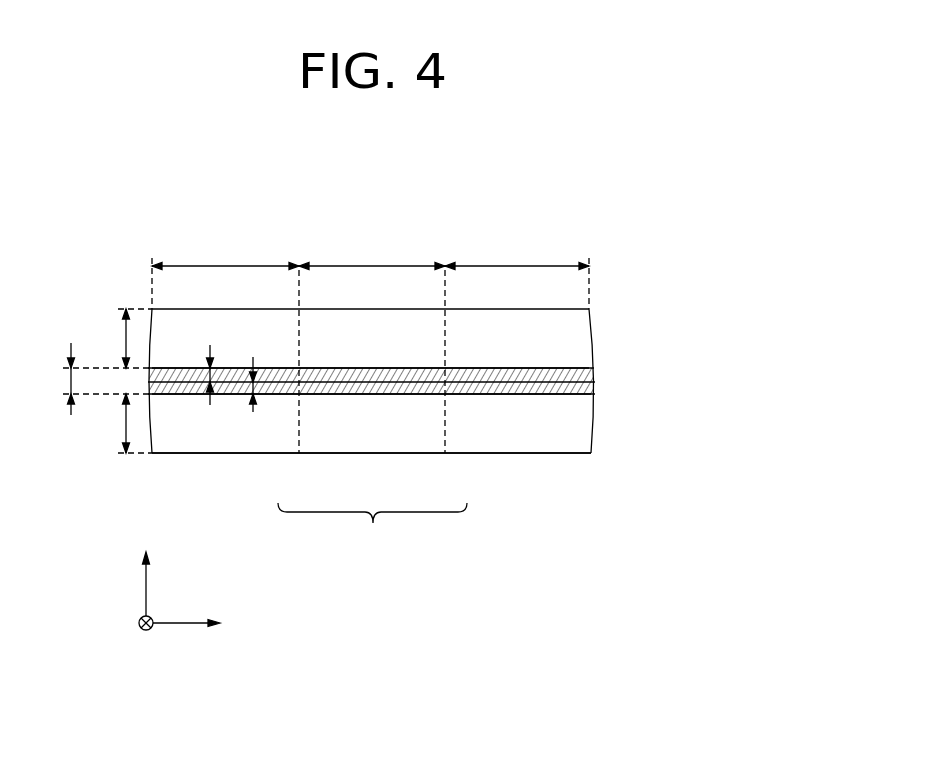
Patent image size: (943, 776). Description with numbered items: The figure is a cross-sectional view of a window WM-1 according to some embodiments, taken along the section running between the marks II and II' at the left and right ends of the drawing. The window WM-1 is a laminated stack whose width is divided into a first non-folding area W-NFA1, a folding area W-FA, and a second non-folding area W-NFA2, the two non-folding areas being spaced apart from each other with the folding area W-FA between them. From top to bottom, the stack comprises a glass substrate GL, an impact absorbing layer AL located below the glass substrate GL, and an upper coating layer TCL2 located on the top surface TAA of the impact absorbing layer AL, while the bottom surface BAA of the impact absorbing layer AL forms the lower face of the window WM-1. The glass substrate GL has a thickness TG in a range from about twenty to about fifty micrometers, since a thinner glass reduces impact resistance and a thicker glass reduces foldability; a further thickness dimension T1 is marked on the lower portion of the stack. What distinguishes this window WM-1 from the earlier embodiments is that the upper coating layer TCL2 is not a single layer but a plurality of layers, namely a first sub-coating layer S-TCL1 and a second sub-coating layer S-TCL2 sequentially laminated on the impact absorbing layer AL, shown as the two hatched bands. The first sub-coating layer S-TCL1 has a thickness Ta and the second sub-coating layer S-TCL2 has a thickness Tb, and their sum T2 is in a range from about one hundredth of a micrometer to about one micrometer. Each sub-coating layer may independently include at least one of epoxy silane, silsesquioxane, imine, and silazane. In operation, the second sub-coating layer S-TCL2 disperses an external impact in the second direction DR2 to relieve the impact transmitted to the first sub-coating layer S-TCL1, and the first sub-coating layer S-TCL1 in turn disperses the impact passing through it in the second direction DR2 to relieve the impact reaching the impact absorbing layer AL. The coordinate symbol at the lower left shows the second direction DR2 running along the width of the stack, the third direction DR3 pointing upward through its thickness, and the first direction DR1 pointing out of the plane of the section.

The window WM-1 is at (645, 242).
The glass substrate GL is at (582, 338).
The top surface TAA is at (545, 389).
The impact absorbing layer AL is at (578, 428).
The bottom surface BAA is at (545, 455).
The first sub-coating layer S-TCL1 is at (322, 376).
The second sub-coating layer S-TCL2 is at (422, 388).
The upper coating layer TCL2 is at (372, 528).
The thickness of first sub-coating layer Ta is at (202, 373).
The thickness of second sub-coating layer Tb is at (248, 389).
The thickness of glass substrate TG is at (124, 338).
The sum of thicknesses T2 is at (96, 379).
The thickness of auxiliary layer T1 is at (124, 423).
The first non-folding area W-NFA1 is at (225, 344).
The folding area W-FA is at (372, 344).
The second non-folding area W-NFA2 is at (517, 272).
The section line start II is at (153, 470).
The section line end II' is at (596, 472).
The first direction DR1 is at (145, 639).
The second direction DR2 is at (208, 626).
The third direction DR3 is at (145, 570).